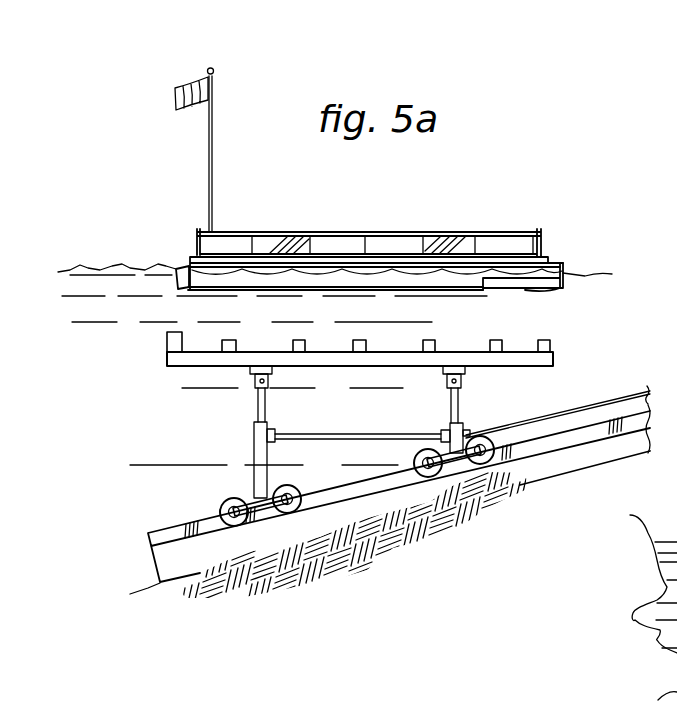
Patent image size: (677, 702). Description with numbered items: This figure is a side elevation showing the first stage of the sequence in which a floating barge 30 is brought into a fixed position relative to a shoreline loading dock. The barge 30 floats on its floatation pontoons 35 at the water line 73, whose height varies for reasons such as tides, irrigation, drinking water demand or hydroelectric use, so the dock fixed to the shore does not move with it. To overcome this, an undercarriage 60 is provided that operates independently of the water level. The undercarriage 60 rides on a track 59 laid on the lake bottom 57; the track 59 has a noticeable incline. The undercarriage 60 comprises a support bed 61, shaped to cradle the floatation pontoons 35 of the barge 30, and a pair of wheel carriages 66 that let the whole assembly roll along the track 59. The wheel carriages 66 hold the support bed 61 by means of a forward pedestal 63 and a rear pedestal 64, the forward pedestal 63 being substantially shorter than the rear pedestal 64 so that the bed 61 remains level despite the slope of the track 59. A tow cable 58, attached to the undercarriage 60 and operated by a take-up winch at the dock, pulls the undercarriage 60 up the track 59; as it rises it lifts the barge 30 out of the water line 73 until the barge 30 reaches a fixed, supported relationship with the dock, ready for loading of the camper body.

The barge 30 is at (383, 261).
The floatation pontoons 35 is at (522, 288).
The water line 73 is at (588, 273).
The support bed 61 is at (330, 352).
The forward pedestal 63 is at (443, 386).
The rear pedestal 64 is at (255, 437).
The undercarriage 60 is at (362, 433).
The wheel carriages 66 is at (293, 487).
The track 59 is at (156, 534).
The tow cable 58 is at (613, 398).
The lake bottom 57 is at (414, 542).